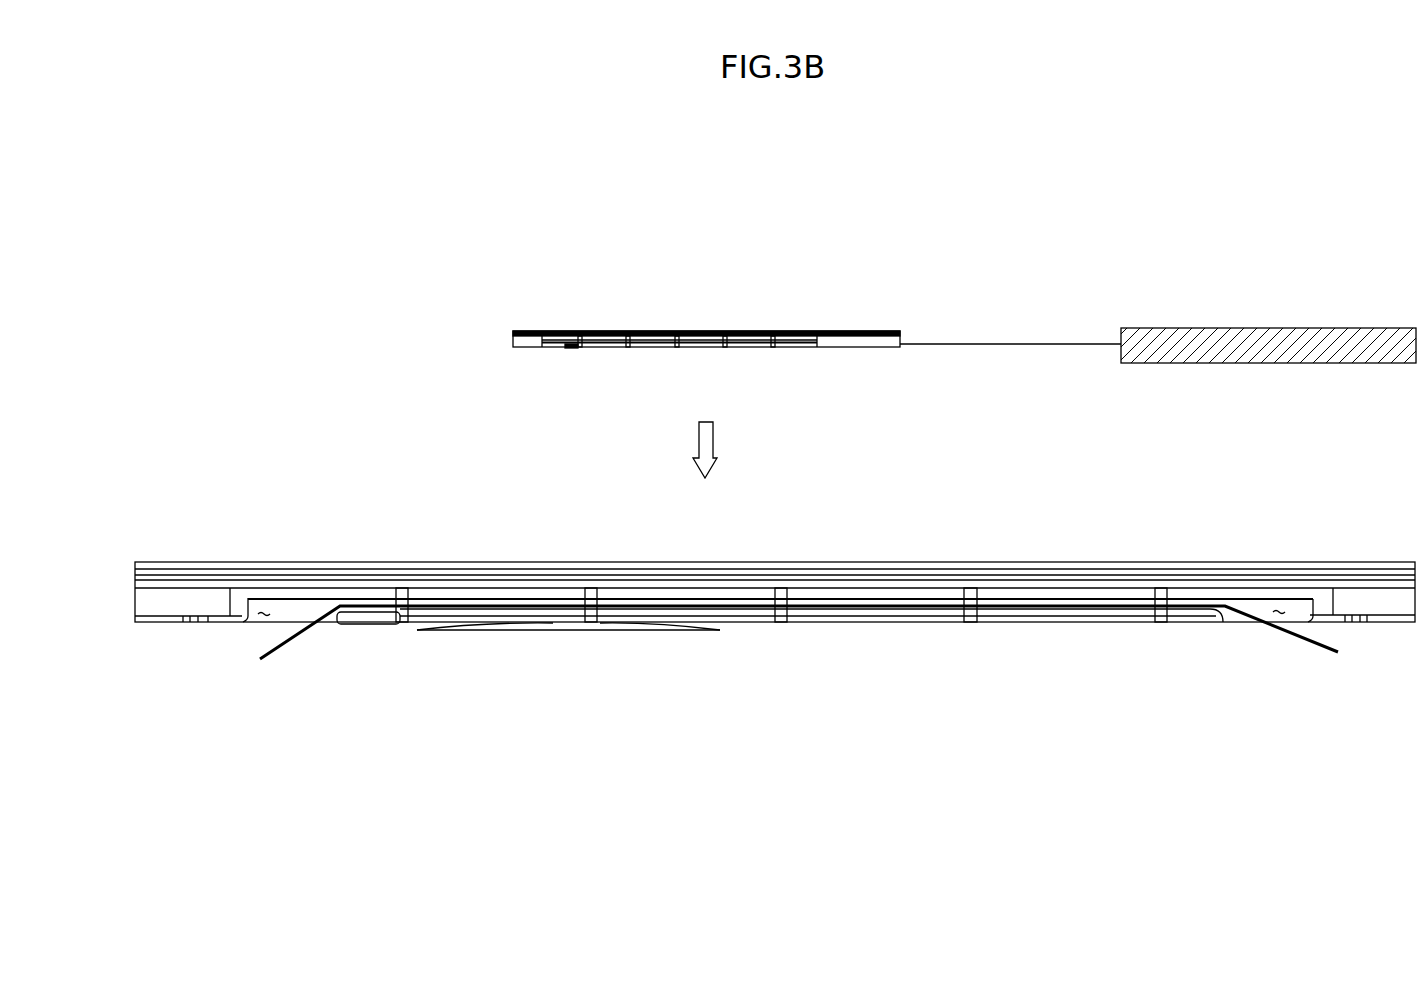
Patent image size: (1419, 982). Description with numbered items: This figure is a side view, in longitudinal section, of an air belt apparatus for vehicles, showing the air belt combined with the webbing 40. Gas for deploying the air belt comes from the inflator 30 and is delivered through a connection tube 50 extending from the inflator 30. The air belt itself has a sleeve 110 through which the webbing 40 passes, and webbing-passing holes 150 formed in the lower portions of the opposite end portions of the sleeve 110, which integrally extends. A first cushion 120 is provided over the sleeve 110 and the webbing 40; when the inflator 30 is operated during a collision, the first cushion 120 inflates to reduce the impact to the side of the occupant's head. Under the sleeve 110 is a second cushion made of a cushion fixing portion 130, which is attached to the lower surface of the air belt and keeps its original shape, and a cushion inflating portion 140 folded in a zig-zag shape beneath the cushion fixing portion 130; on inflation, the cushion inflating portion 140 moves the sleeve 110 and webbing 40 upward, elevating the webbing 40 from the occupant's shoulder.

The inflator 30 is at (1268, 328).
The webbing 40 is at (1309, 641).
The connection tube 50 is at (1011, 344).
The sleeve 110 is at (323, 598).
The first cushion 120 is at (472, 565).
The cushion fixing portion 130 is at (1030, 620).
The cushion inflating portion 140 is at (568, 631).
The webbing-passing hole 150 is at (262, 616).